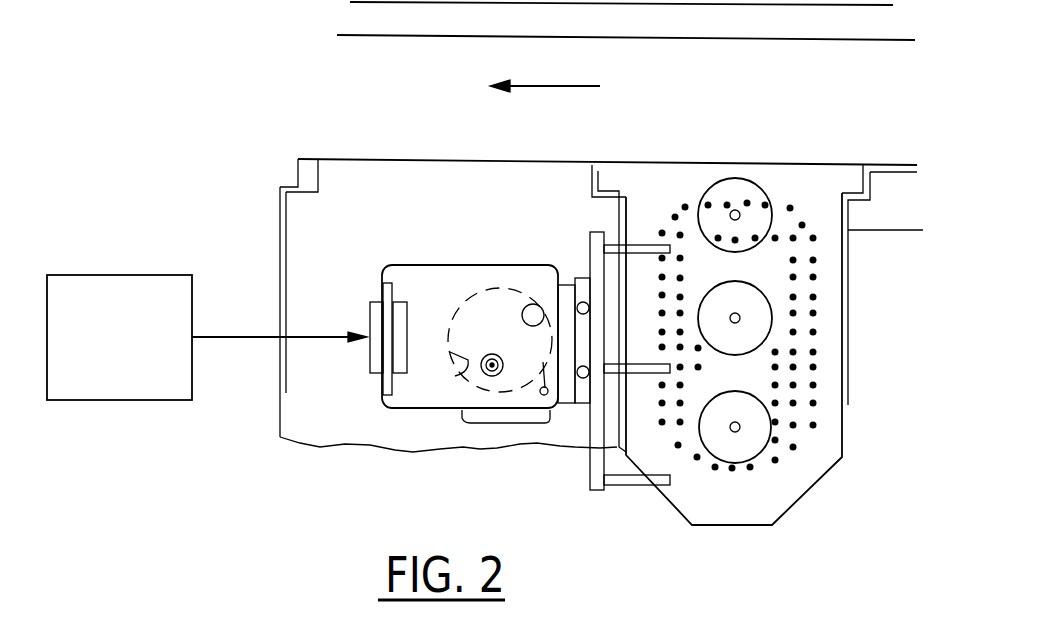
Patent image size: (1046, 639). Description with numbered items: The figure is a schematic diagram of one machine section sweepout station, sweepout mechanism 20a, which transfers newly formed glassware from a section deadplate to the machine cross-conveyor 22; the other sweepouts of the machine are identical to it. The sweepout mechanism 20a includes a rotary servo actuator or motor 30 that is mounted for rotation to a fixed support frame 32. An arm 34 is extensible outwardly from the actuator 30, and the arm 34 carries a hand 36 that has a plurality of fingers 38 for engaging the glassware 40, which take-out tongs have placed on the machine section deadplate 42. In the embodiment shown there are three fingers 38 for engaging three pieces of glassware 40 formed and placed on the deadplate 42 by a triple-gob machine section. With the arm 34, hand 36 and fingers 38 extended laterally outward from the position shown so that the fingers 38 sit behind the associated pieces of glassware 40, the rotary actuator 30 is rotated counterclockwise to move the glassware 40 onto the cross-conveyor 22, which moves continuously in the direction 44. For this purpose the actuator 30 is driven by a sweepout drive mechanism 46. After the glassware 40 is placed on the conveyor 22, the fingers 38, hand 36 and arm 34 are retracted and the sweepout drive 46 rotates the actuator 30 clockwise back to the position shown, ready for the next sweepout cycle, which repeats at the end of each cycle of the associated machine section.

The sweepout mechanism 20a is at (431, 182).
The cross-conveyor 22 is at (733, 57).
The rotary servo actuator 30 is at (400, 402).
The fixed support frame 32 is at (293, 239).
The arm 34 is at (568, 285).
The hand 36 is at (595, 466).
The fingers 38 is at (648, 245).
The glassware 40 is at (746, 179).
The machine section deadplate 42 is at (828, 335).
The direction 44 is at (576, 84).
The sweepout drive mechanism 46 is at (121, 273).